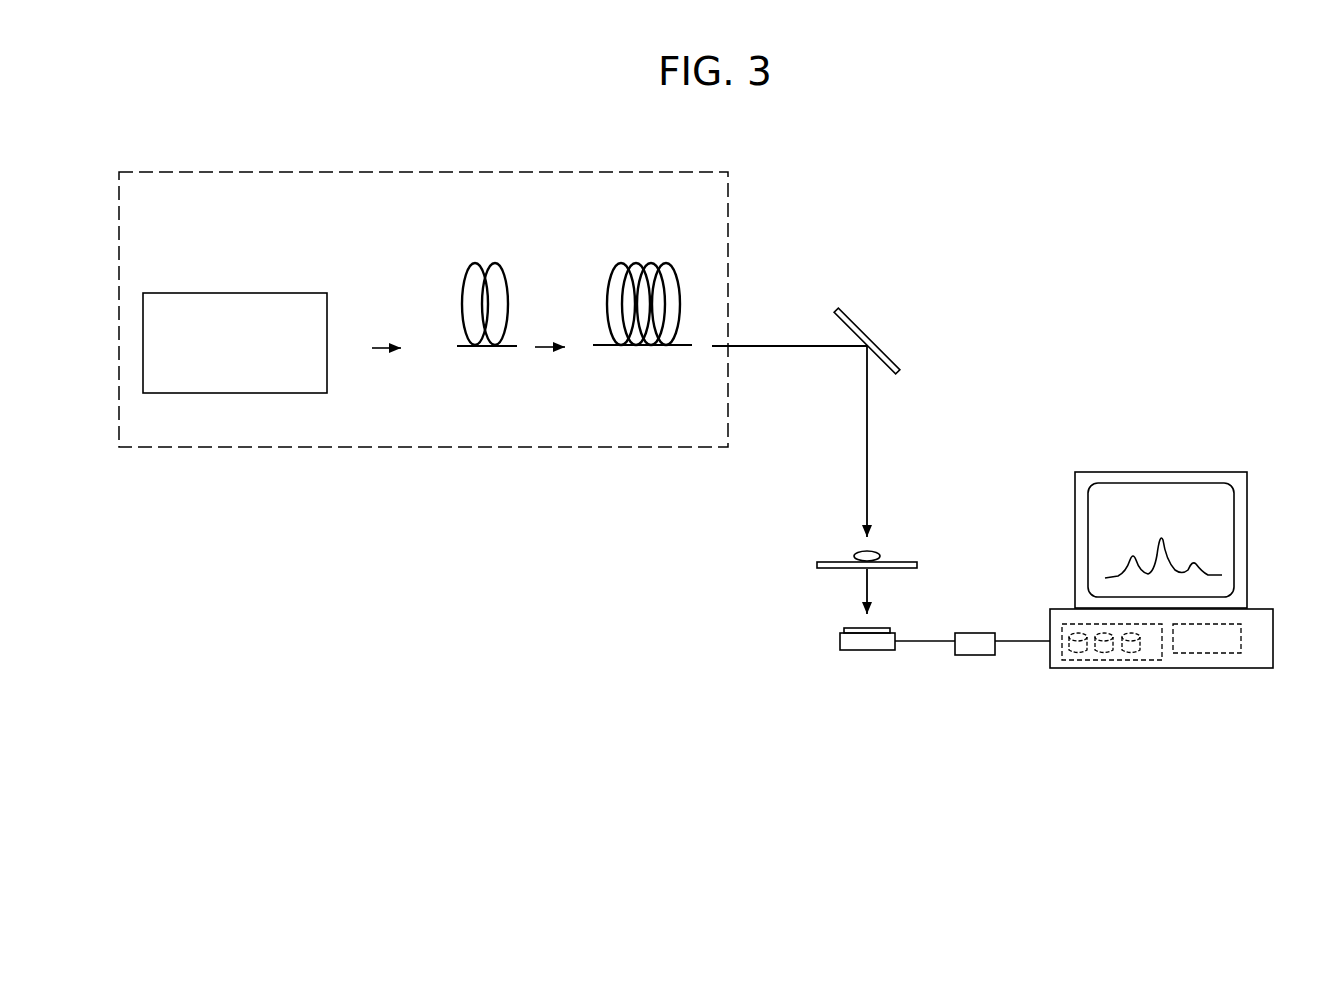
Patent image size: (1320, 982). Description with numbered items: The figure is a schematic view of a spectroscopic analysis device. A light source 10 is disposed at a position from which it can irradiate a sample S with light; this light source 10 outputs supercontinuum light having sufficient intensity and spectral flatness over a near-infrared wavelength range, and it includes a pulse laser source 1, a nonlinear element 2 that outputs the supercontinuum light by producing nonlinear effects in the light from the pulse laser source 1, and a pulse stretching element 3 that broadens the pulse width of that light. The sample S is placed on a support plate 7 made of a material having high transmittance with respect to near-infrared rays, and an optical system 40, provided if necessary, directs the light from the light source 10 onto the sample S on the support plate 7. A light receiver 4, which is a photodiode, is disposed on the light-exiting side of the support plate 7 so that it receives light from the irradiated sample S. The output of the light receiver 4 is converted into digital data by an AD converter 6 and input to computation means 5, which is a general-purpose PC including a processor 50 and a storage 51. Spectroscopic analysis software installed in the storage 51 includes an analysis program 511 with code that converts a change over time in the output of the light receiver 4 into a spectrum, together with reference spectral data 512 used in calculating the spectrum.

The pulse laser source 1 is at (266, 293).
The nonlinear element 2 is at (497, 263).
The pulse stretching element 3 is at (665, 263).
The light receiver 4 is at (840, 645).
The computation means 5 is at (1233, 437).
The AD converter 6 is at (970, 657).
The support plate 7 is at (817, 565).
The light source 10 is at (423, 447).
The optical system 40 is at (933, 302).
The processor 50 is at (1205, 653).
The storage 51 is at (1083, 684).
The analysis program 511 is at (1073, 658).
The reference spectral data 512 is at (1102, 658).
The sample S is at (880, 552).